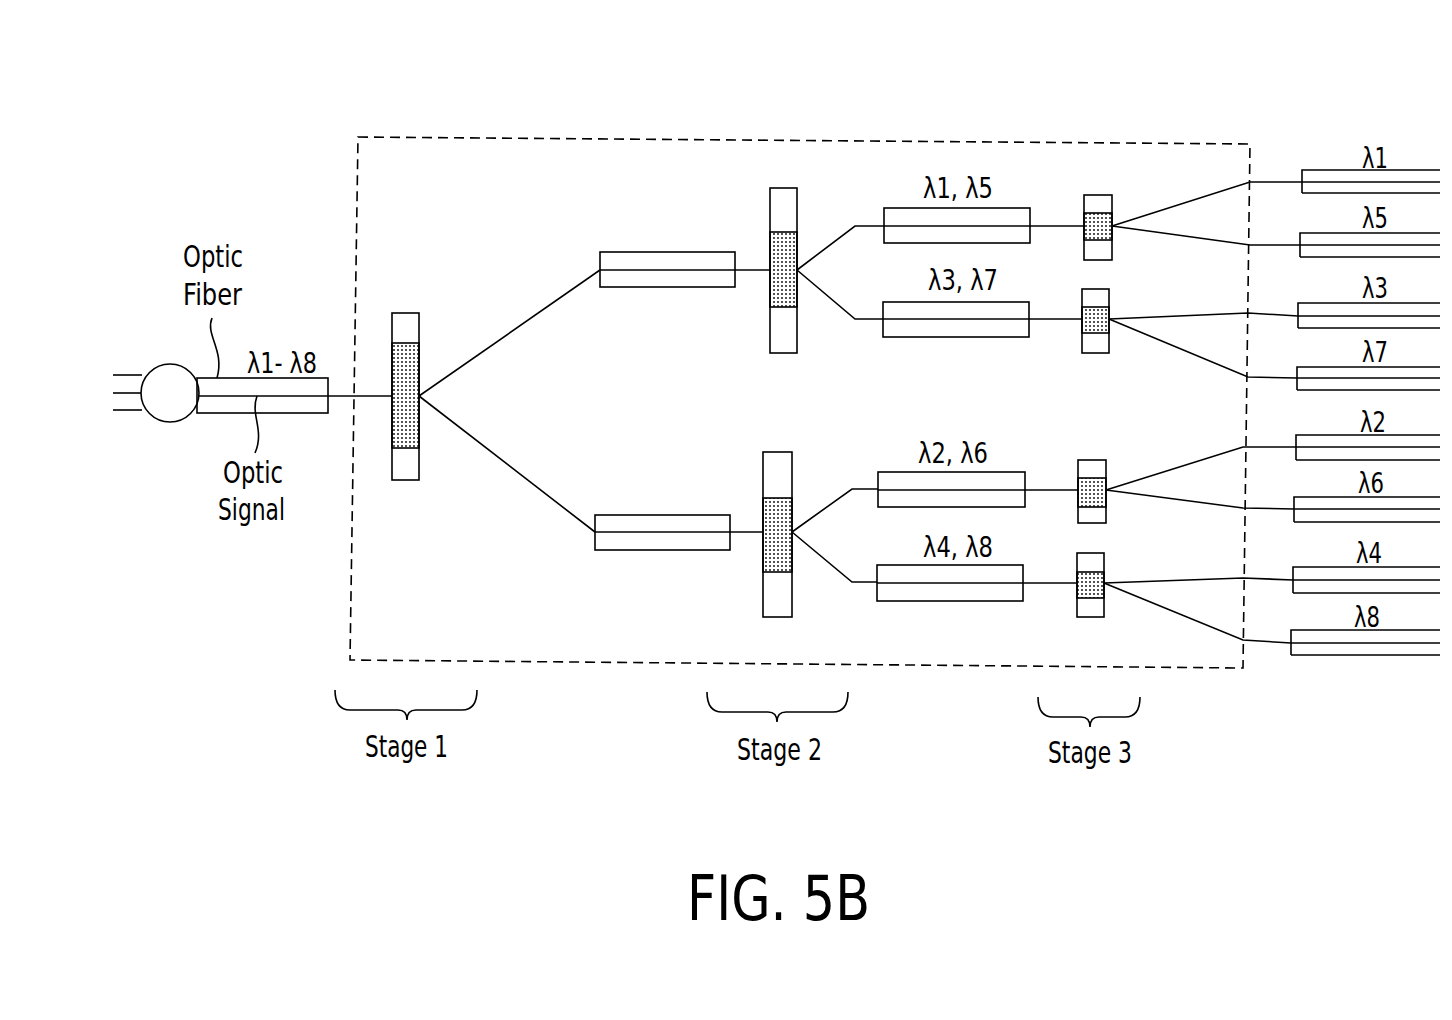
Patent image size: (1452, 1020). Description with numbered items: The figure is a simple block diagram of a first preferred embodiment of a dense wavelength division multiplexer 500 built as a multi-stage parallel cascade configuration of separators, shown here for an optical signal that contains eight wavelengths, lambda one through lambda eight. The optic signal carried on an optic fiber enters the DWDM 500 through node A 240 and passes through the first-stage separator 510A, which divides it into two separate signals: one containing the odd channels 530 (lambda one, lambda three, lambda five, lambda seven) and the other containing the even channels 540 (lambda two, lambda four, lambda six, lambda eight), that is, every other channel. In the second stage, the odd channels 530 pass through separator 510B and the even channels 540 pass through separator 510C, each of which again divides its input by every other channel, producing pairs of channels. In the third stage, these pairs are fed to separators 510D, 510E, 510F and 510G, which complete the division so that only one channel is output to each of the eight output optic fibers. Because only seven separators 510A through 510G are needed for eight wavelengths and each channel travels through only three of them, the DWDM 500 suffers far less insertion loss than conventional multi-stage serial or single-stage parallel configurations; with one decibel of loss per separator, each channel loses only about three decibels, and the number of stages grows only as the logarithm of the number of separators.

The node A 240 is at (165, 423).
The dense wavelength division multiplexer 500 is at (1095, 112).
The separator 510A is at (400, 313).
The separator 510B is at (768, 328).
The separator 510C is at (763, 590).
The separator 510D is at (1112, 202).
The separator 510E is at (1109, 298).
The separator 510F is at (1106, 465).
The separator 510G is at (1104, 560).
The odd channel signal 530 is at (627, 270).
The even channel signal 540 is at (622, 533).